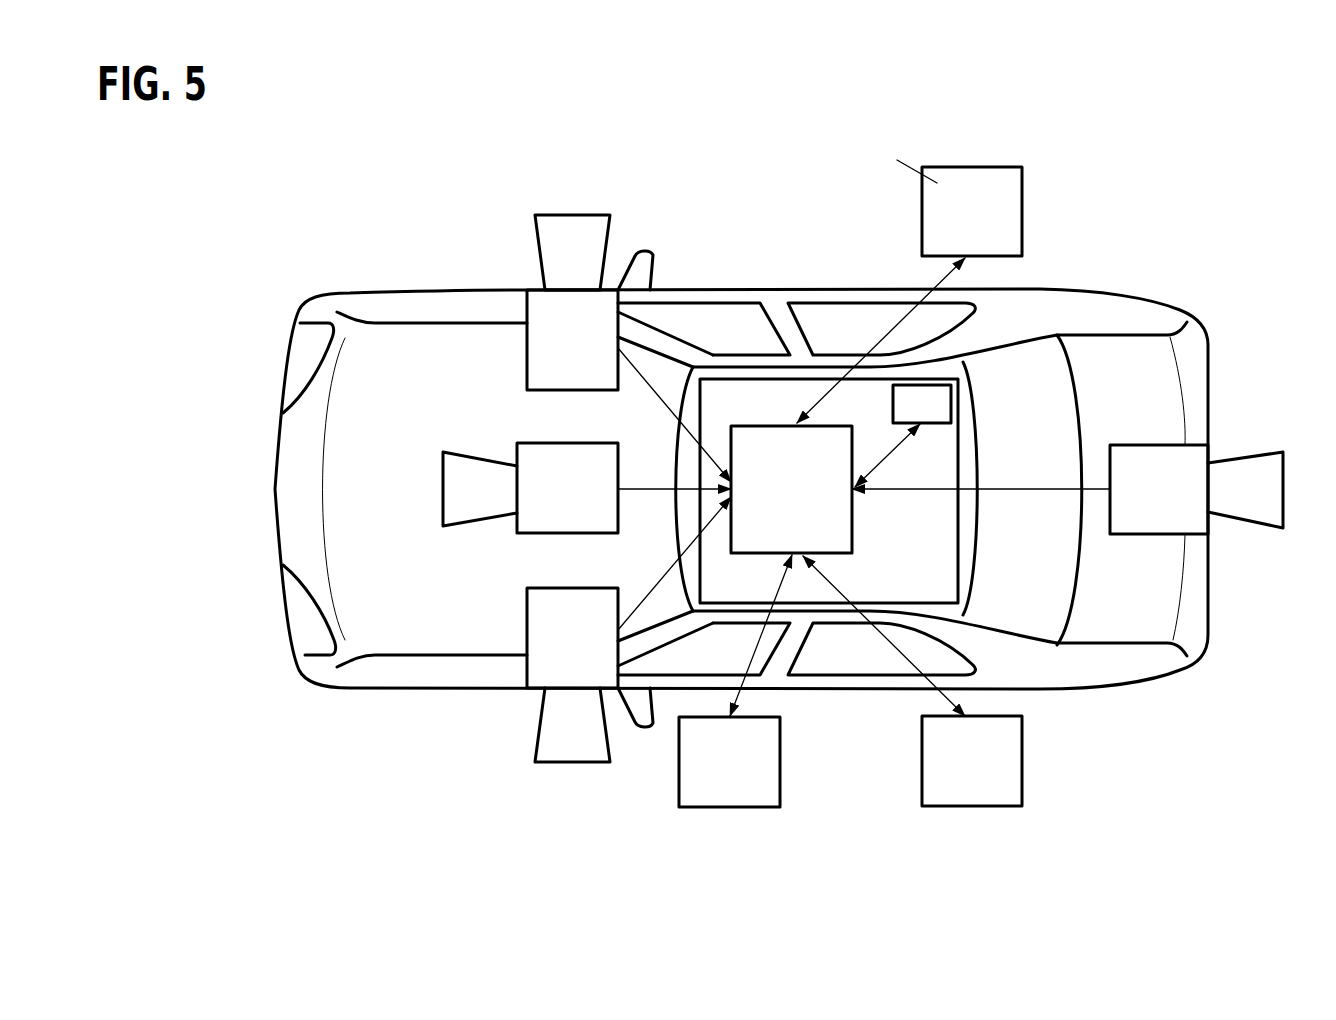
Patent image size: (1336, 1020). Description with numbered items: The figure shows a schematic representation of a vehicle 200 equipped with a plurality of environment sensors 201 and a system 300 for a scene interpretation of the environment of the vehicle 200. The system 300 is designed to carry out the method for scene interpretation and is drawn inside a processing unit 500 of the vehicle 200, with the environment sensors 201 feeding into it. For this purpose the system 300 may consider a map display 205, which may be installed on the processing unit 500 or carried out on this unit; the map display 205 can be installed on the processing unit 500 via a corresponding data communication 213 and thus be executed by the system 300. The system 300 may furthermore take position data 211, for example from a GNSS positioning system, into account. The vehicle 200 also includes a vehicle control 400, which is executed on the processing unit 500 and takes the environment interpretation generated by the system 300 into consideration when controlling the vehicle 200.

The vehicle 200 is at (336, 285).
The environment sensors 201 is at (542, 302).
The system for a scene interpretation 300 is at (758, 445).
The vehicle control 400 is at (937, 403).
The processing unit 500 is at (960, 553).
The data communication 213 is at (998, 202).
The map display 205 is at (762, 778).
The position data 211 is at (1000, 780).